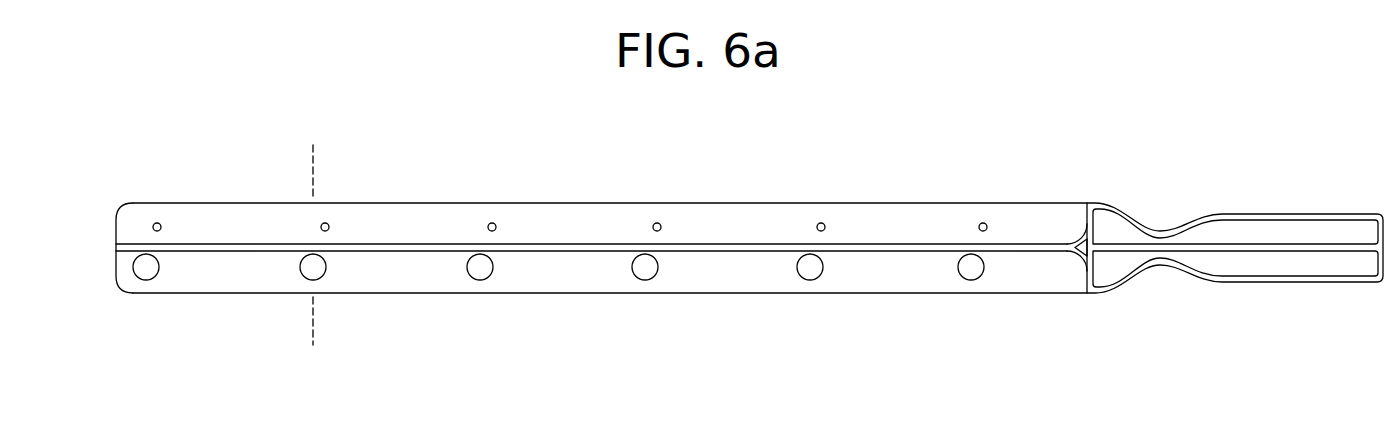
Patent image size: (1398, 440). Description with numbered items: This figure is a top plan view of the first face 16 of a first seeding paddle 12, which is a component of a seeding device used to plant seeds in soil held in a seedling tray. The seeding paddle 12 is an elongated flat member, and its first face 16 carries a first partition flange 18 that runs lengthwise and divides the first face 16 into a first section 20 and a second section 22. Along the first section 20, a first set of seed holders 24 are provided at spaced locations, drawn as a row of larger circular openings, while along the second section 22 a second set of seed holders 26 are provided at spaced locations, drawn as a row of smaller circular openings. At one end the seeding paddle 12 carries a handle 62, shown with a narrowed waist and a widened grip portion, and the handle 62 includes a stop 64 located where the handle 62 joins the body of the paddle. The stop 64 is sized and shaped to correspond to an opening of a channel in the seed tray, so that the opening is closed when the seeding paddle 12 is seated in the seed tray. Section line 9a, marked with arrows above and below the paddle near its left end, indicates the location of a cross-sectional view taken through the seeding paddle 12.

The seeding paddle 12 is at (1071, 158).
The first face 16 is at (125, 227).
The first partition flange 18 is at (725, 253).
The first section 20 is at (550, 273).
The second section 22 is at (741, 227).
The first set of seed holders 24 is at (473, 278).
The second set of seed holders 26 is at (489, 224).
The handle 62 is at (1268, 283).
The stop 64 is at (1081, 279).
The section line 9a is at (313, 153).